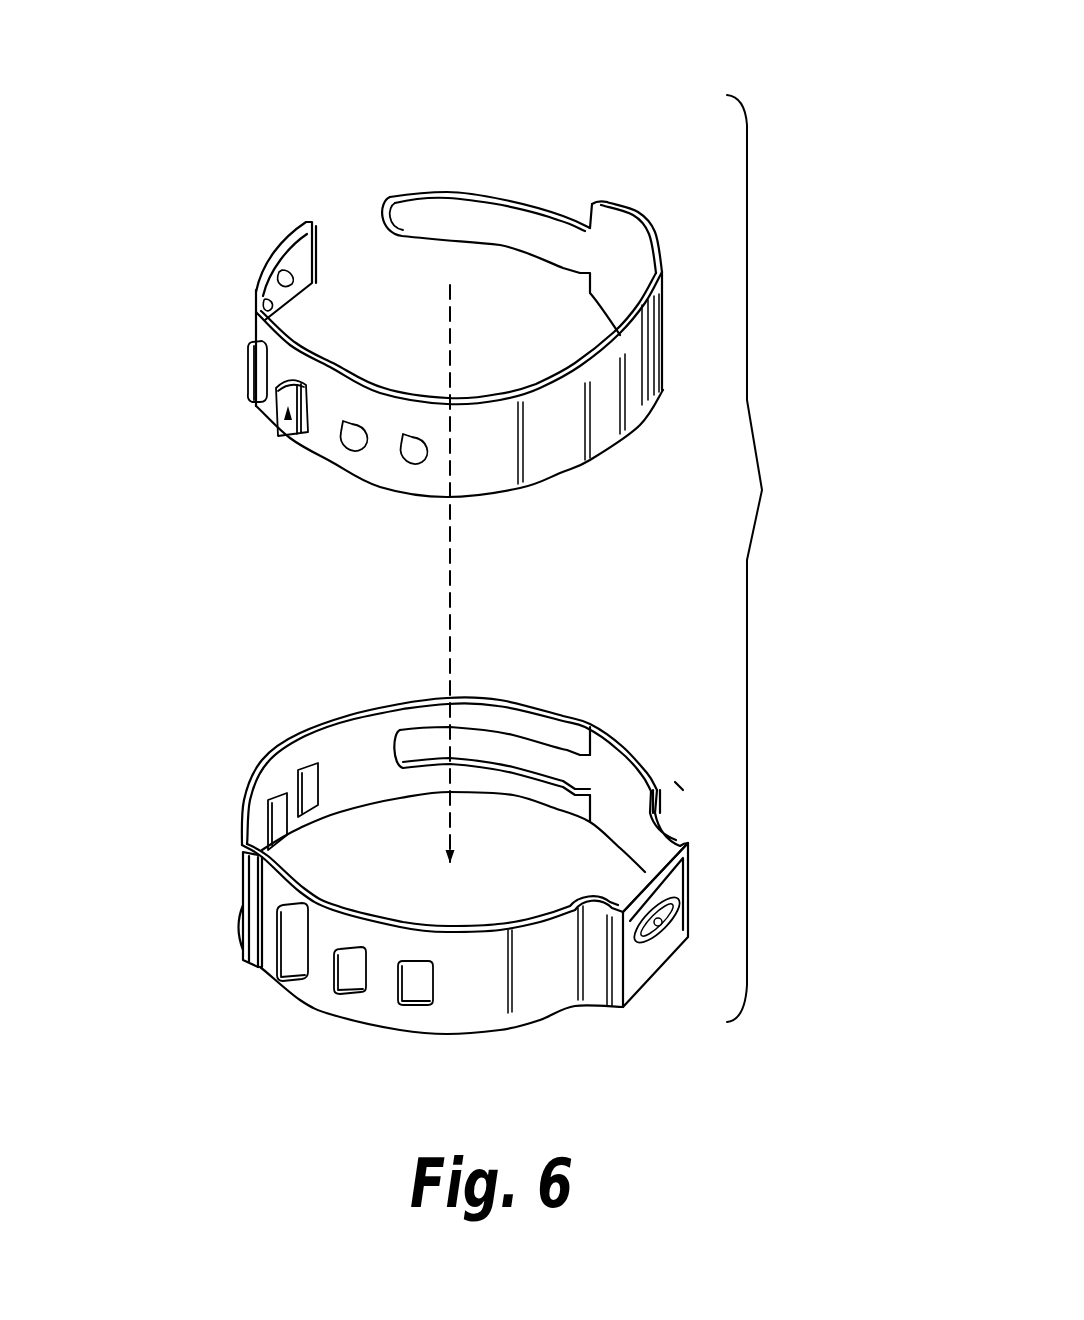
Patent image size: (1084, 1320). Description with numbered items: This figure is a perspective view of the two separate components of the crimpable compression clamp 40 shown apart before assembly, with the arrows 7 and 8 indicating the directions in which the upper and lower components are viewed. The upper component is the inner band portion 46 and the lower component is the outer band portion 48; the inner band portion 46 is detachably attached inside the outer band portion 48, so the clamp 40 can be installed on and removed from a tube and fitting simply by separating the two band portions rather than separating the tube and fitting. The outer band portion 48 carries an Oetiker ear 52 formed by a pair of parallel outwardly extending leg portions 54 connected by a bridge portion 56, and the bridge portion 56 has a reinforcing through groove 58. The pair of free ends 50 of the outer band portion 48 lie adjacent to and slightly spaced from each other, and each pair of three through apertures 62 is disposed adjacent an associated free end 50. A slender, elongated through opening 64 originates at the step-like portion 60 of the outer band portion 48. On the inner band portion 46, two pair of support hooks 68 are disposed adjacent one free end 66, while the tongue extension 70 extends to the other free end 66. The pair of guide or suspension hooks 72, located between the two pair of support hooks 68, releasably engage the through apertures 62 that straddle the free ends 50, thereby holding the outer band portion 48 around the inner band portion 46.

The section view direction arrow 7 is at (401, 128).
The section view direction arrow 8 is at (405, 658).
The crimpable compression clamp 40 is at (790, 492).
The inner band portion 46 is at (643, 432).
The outer band portion 48 is at (278, 744).
The pair of free ends of outer band portion 50 is at (255, 853).
The Oetiker ear of outer band portion 52 is at (644, 978).
The pair of parallel outwardly extending leg portions 54 is at (671, 822).
The bridge portion 56 is at (677, 880).
The reinforcing through groove 58 is at (657, 930).
The step-like portion of outer band portion 60 is at (591, 703).
The pair of three through apertures 62 is at (413, 965).
The through opening of outer band portion 64 is at (500, 746).
The pair of free ends of inner band portion 66 is at (382, 227).
The two pair of support hooks 68 is at (412, 463).
The tongue extension of inner band portion 70 is at (501, 190).
The pair of guide or suspension hooks 72 is at (243, 355).